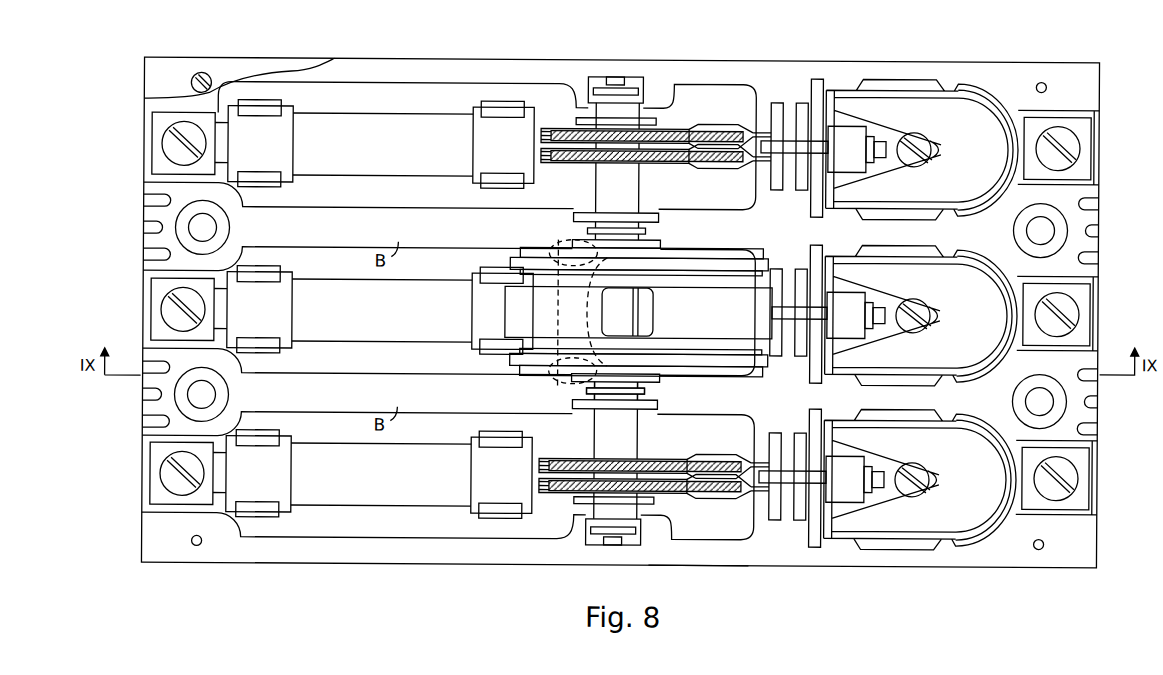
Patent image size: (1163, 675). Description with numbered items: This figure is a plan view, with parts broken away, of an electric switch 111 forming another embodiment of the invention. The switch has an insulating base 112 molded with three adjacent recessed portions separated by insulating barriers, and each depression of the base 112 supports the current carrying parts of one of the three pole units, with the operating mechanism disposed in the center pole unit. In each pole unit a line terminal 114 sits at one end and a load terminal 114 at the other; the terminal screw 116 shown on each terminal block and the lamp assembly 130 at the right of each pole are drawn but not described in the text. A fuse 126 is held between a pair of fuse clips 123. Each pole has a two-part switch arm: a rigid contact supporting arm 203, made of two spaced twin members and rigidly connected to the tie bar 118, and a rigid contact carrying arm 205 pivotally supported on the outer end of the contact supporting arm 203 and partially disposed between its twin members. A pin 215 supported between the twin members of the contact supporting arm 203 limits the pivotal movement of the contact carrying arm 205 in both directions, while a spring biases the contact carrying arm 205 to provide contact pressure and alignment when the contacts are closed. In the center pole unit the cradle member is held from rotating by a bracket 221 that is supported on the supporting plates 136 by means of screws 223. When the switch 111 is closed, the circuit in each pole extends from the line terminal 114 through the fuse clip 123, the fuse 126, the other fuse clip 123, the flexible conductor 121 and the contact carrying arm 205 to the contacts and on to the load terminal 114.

The switch 111 is at (690, 594).
The insulating base 112 is at (512, 560).
The line terminal 114 is at (157, 163).
The terminal screw 116 is at (168, 142).
The tie bar 118 is at (628, 204).
The flexible conductor 121 is at (573, 163).
The fuse clip 123 is at (275, 111).
The fuse 126 is at (403, 168).
The lamp assembly 130 is at (925, 98).
The supporting plates 136 is at (528, 369).
The contact supporting arm 203 is at (670, 127).
The contact carrying arm 205 is at (793, 151).
The pin 215 is at (762, 135).
The bracket 221 is at (577, 308).
The screws 223 is at (563, 250).